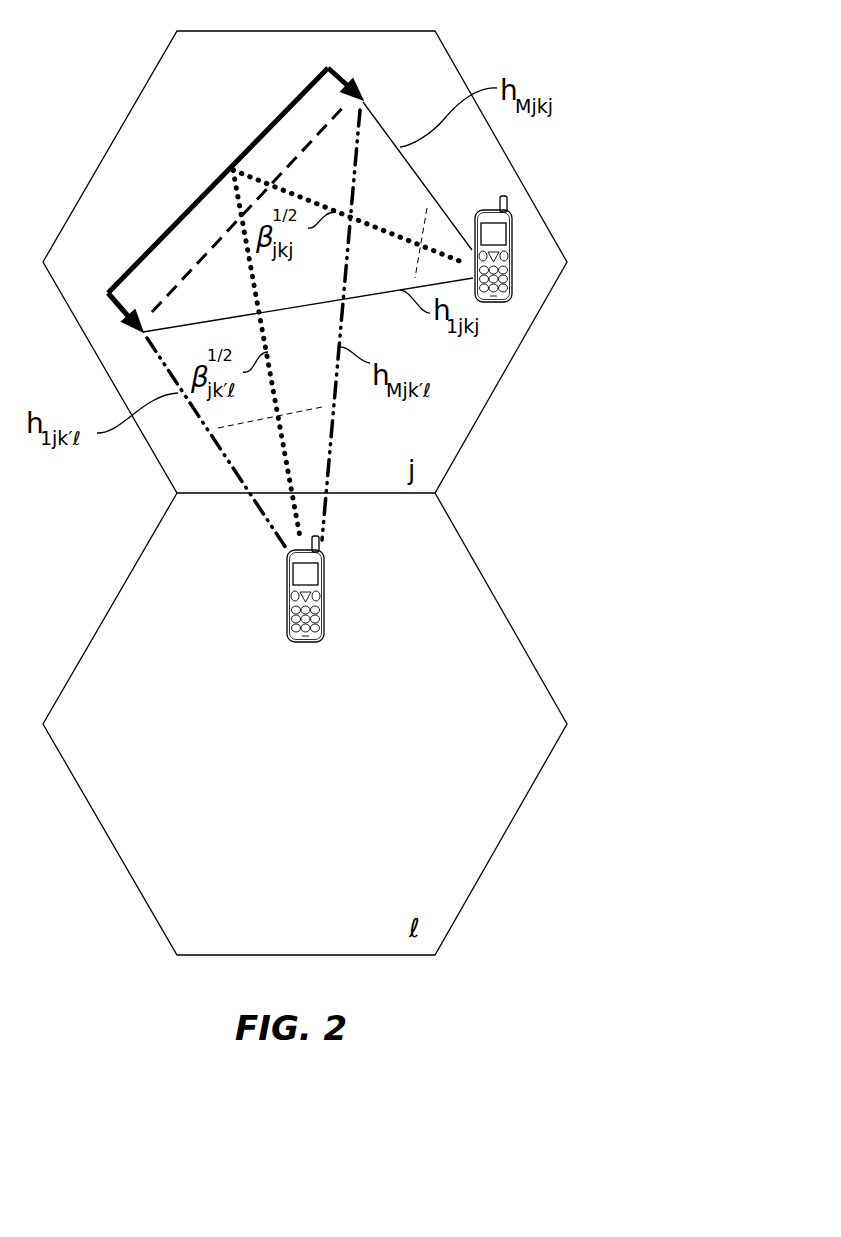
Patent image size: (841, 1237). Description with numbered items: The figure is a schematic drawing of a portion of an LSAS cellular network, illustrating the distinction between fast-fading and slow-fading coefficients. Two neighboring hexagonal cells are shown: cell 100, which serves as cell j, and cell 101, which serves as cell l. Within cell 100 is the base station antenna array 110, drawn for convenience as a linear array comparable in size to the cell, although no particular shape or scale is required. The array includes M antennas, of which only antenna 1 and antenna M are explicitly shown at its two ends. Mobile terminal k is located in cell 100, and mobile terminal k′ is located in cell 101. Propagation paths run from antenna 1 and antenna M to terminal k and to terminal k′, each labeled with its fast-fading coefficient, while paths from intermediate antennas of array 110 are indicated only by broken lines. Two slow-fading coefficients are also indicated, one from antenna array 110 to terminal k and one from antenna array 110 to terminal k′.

The cell 100 is at (513, 166).
The cell 101 is at (503, 608).
The base station antenna array 110 is at (275, 121).
The antenna 1 is at (128, 323).
The antenna M is at (362, 88).
The mobile terminal k is at (514, 237).
The mobile terminal k′ is at (325, 615).